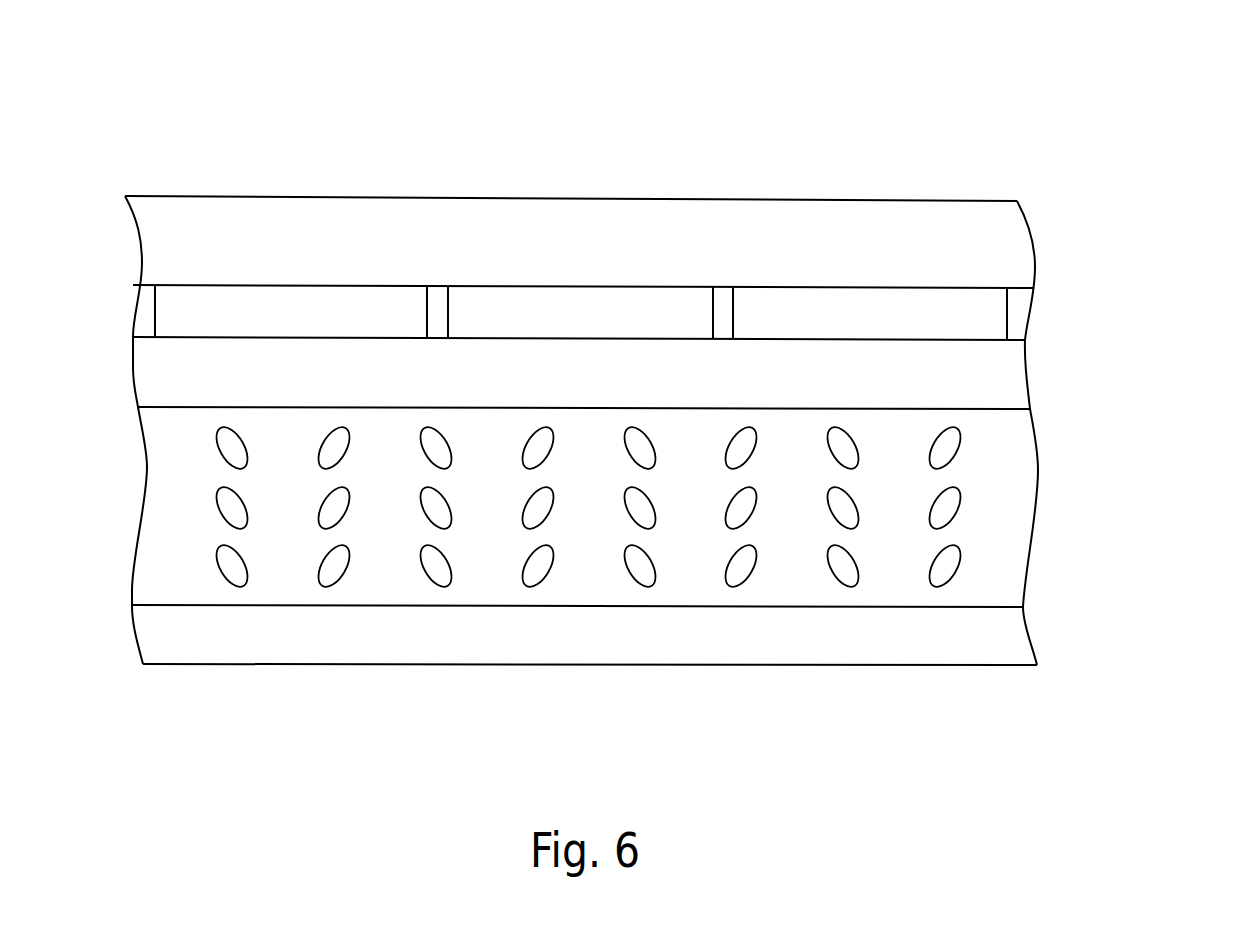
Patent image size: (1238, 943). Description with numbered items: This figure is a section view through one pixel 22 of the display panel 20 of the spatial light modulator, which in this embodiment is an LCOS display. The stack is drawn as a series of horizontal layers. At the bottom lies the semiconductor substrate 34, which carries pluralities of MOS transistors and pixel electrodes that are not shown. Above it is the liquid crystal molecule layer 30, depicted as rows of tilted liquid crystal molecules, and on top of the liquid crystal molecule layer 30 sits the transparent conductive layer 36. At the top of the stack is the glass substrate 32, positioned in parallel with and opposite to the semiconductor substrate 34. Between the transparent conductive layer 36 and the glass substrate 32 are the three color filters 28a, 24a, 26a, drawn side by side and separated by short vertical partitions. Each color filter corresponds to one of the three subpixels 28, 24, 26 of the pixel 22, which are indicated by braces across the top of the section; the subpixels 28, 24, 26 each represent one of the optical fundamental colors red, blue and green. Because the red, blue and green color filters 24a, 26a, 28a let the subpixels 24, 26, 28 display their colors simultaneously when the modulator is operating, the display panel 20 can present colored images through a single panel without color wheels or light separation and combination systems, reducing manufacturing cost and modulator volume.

The display panel 20 is at (1086, 157).
The pixel 22 is at (1038, 687).
The subpixel 24 is at (712, 180).
The color filter 24a is at (610, 328).
The subpixel 26 is at (1002, 180).
The color filter 26a is at (950, 315).
The subpixel 28 is at (160, 180).
The color filter 28a is at (210, 313).
The liquid crystal molecule layer 30 is at (112, 405).
The glass substrate 32 is at (155, 242).
The semiconductor substrate 34 is at (158, 638).
The transparent conductive layer 36 is at (155, 375).